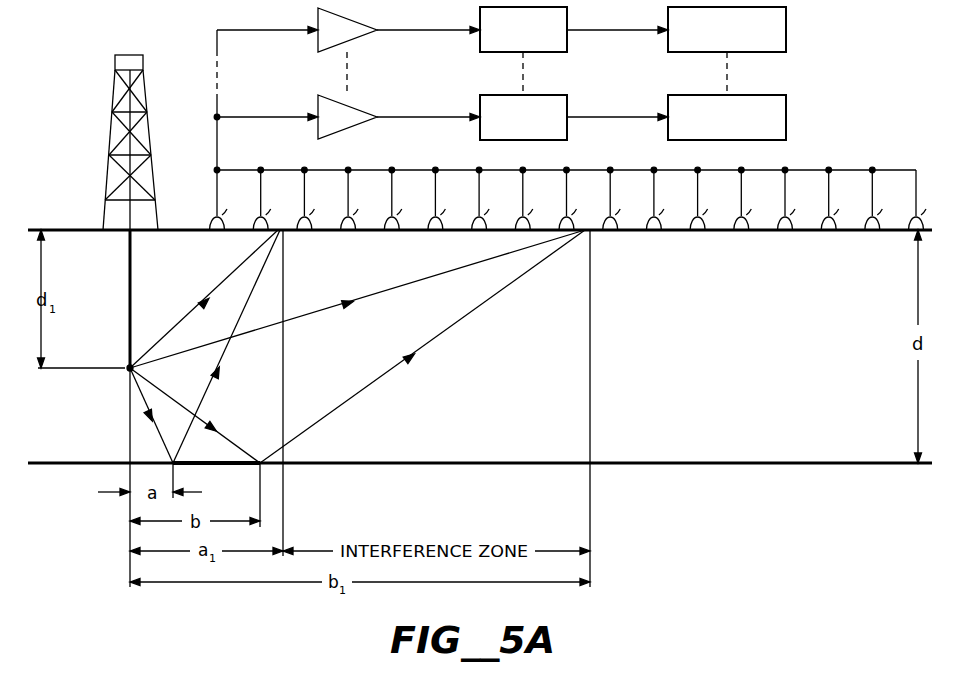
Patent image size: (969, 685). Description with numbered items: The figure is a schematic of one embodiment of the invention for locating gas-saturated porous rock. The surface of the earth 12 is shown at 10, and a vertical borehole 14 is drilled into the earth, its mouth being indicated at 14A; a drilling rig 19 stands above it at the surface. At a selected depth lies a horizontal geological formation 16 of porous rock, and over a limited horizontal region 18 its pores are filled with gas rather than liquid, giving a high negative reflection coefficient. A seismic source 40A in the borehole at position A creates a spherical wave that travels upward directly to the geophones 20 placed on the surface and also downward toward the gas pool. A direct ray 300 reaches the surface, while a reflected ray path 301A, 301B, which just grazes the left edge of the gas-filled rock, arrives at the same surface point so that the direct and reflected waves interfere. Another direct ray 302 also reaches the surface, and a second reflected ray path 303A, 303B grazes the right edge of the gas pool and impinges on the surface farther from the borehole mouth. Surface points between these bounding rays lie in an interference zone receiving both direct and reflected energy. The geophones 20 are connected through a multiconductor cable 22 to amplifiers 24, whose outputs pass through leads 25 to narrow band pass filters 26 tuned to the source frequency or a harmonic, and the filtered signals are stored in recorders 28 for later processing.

The surface of the earth 10 is at (70, 228).
The earth 12 is at (771, 336).
The vertical borehole 14 is at (128, 264).
The mouth of the borehole 14A is at (133, 235).
The horizontal geological formation 16 is at (736, 464).
The gas-filled porous rock 18 is at (220, 466).
The drilling rig 19 is at (110, 99).
The geophones 20 is at (858, 163).
The multiconductor cable 22 is at (217, 144).
The amplifiers 24 is at (318, 98).
The leads 25 is at (422, 114).
The narrow band pass filters 26 is at (568, 102).
The recorder 28 is at (786, 104).
The source of seismic waves at position A 40A is at (130, 370).
The direct ray 300 is at (178, 322).
The reflected ray path (downgoing segment) 301A is at (148, 412).
The reflected ray path (upgoing segment) 301B is at (262, 279).
The direct ray to geophone I 302 is at (393, 290).
The bounding ray path (downgoing segment) 303A is at (246, 444).
The bounding ray path (upgoing segment) 303B is at (437, 337).